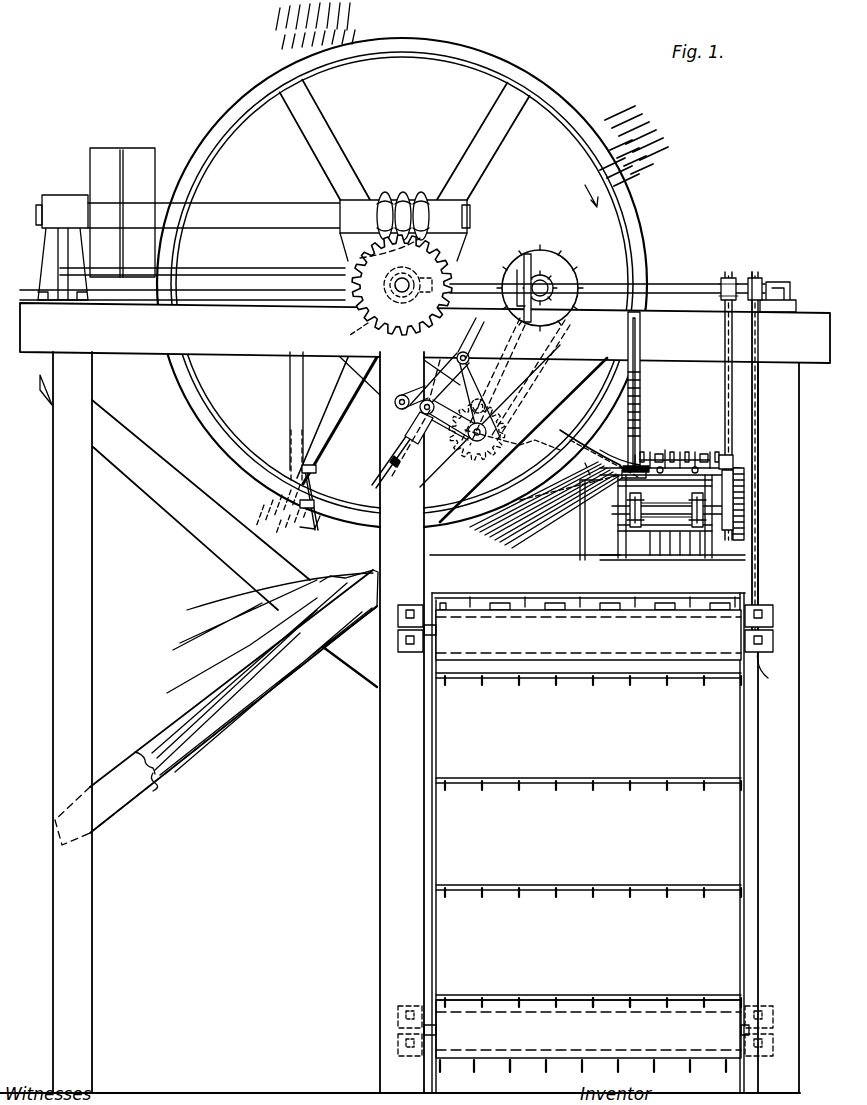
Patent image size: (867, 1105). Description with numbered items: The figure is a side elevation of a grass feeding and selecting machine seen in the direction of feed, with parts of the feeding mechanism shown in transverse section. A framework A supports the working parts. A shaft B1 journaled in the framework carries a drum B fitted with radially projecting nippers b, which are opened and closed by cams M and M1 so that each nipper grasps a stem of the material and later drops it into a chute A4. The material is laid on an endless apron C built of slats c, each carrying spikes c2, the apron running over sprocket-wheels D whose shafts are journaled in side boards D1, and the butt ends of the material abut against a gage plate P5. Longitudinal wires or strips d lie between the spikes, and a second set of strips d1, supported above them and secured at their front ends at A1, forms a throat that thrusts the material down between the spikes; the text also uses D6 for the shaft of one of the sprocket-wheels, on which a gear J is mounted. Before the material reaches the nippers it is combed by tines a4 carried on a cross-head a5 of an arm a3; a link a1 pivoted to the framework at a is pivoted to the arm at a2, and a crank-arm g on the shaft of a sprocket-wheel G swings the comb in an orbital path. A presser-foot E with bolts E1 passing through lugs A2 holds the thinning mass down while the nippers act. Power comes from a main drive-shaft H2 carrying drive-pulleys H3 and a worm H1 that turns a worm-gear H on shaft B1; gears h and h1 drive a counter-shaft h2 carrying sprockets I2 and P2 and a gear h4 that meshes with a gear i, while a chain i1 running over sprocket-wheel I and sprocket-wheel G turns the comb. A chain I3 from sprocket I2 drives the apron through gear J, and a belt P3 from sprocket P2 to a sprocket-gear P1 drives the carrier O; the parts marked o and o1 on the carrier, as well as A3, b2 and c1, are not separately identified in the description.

The drum B is at (440, 55).
The shaft B1 is at (394, 268).
The nippers b is at (654, 149).
The brush at lower rim b2 is at (305, 530).
The framework A is at (415, 698).
The fixed part of framework A1 is at (640, 364).
The lugs A2 is at (625, 461).
The straw guide A3 is at (546, 505).
The chute A4 is at (286, 662).
The worm-gear H is at (427, 260).
The worm H1 is at (394, 196).
The main drive-shaft H2 is at (240, 204).
The drive-pulleys H3 is at (112, 152).
The gear h is at (350, 321).
The gear h1 is at (407, 275).
The counter-shaft h2 is at (671, 281).
The gear h4 is at (529, 254).
The sprocket-wheel I is at (551, 248).
The gear i is at (552, 280).
The sprocket-chain i1 is at (546, 380).
The sprocket-wheel I2 is at (728, 272).
The sprocket-chain I3 is at (658, 354).
The pivot a is at (401, 398).
The link a1 is at (433, 390).
The pivot a2 is at (468, 357).
The arm a3 is at (414, 420).
The tines a4 is at (433, 378).
The cross-head a5 is at (405, 463).
The crank-arm g is at (427, 436).
The sprocket-wheel G is at (464, 441).
The presser-foot E is at (624, 459).
The bolts E1 is at (645, 418).
The cam M is at (625, 432).
The cam M1 is at (291, 502).
The wires or strips d is at (705, 460).
The wires or strips d1 is at (660, 460).
The endless apron C is at (660, 462).
The slats c is at (695, 468).
The feed roller c1 is at (630, 514).
The spikes c2 is at (662, 465).
The sprocket-wheels D is at (622, 512).
The side boards D1 is at (620, 498).
The shaft of sprocket-wheel D6 is at (640, 538).
The gear J is at (745, 492).
The sprocket-gear P1 is at (762, 678).
The sprocket-wheel P2 is at (755, 272).
The belt P3 is at (758, 454).
The plate P5 is at (733, 464).
The carrier O is at (585, 843).
The conveyor slat o is at (568, 998).
The conveyor pin o1 is at (628, 1000).